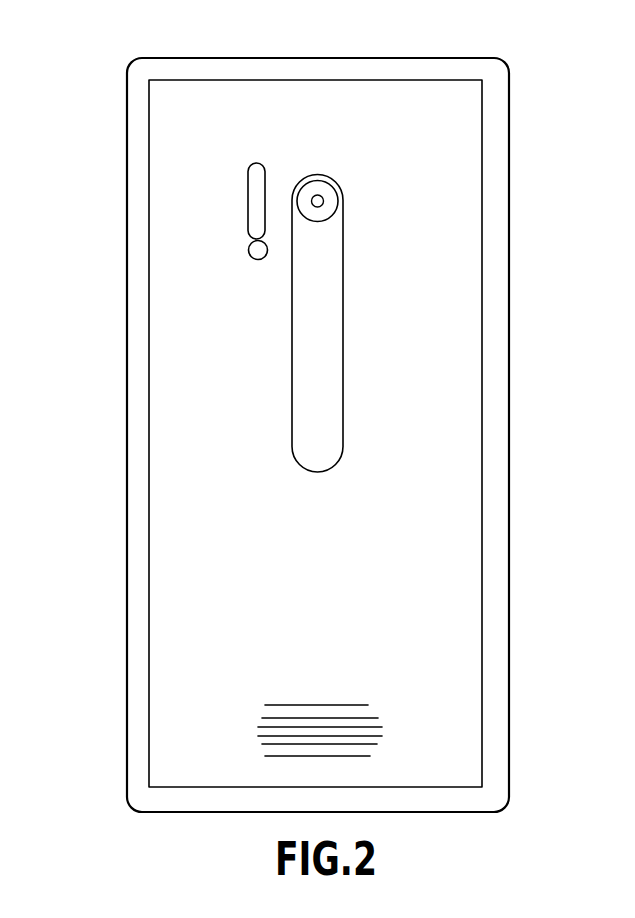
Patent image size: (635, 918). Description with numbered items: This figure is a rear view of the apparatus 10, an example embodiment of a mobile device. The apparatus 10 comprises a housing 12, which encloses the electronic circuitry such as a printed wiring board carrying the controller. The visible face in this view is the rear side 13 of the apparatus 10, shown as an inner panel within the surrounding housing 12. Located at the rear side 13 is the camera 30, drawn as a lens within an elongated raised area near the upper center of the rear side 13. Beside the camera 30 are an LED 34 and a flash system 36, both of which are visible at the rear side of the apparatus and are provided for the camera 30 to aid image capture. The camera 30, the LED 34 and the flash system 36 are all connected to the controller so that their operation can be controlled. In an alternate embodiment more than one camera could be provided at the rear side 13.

The apparatus 10 is at (558, 73).
The housing 12 is at (497, 317).
The rear side 13 is at (468, 425).
The camera 30 is at (330, 198).
The LED 34 is at (252, 250).
The flash system 36 is at (253, 200).